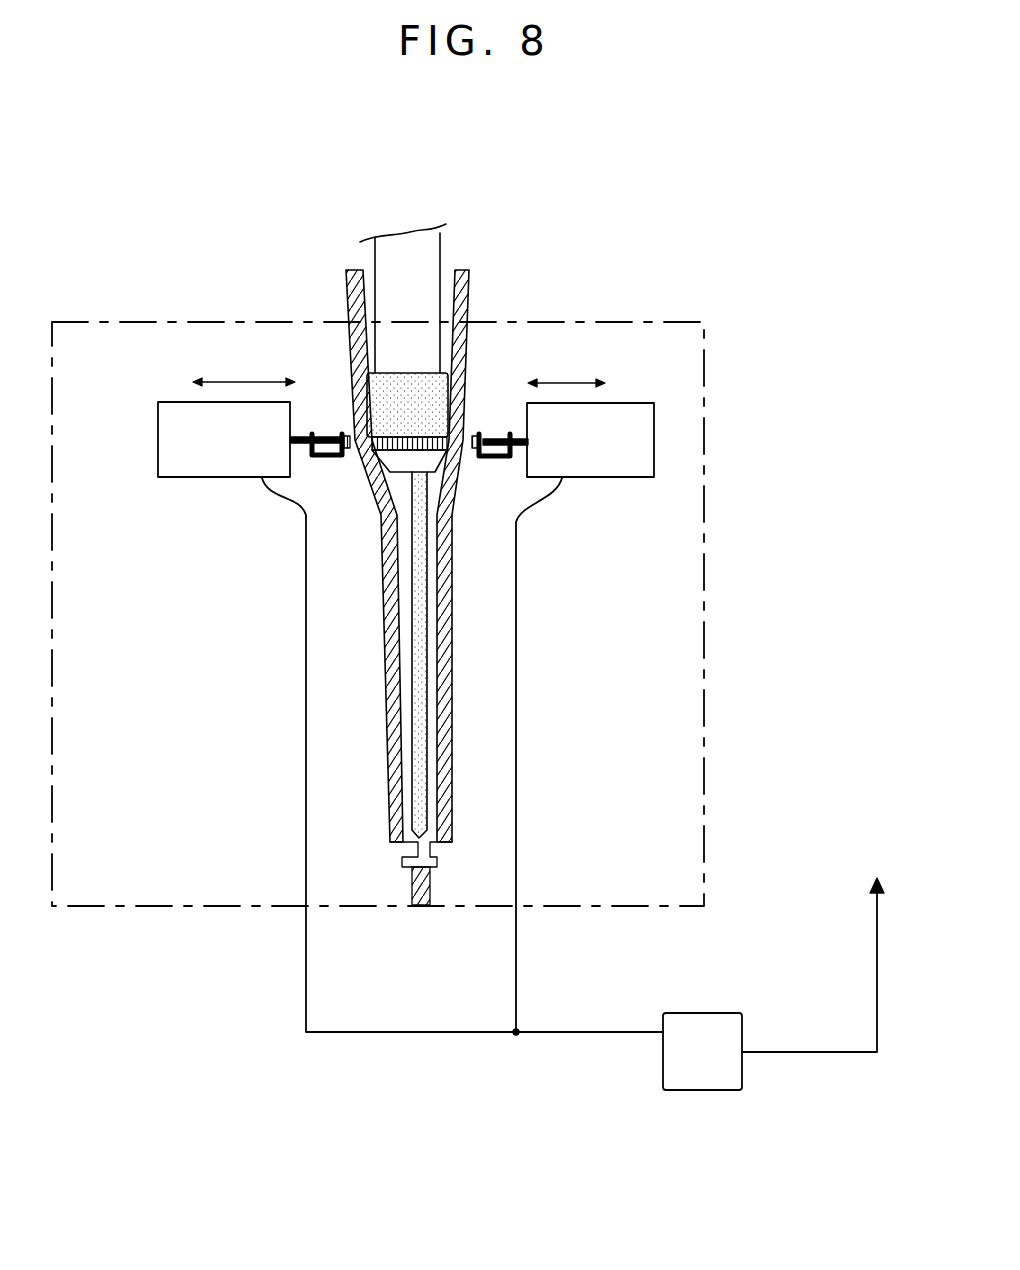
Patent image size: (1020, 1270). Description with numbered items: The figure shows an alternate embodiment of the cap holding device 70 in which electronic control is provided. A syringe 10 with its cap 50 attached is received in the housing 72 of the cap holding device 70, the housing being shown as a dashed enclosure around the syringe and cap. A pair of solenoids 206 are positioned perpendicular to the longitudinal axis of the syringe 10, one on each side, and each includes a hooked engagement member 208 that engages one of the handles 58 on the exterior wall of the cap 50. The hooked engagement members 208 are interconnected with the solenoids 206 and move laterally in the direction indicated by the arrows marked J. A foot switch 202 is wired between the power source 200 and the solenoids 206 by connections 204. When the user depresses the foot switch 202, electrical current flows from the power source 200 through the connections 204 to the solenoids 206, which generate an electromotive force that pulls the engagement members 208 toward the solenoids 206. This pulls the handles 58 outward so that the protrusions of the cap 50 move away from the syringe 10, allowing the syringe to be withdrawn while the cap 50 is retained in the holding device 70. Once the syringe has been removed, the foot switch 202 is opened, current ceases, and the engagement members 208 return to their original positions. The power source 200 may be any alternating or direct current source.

The syringe 10 is at (411, 210).
The cap 50 is at (467, 292).
The handles 58 is at (348, 437).
The cap holding device 70 is at (587, 184).
The housing 72 is at (706, 508).
The power source 200 is at (879, 838).
The foot switch 202 is at (745, 1020).
The connections 204 is at (306, 733).
The solenoids 206 is at (229, 478).
The hooked engagement members 208 is at (329, 478).